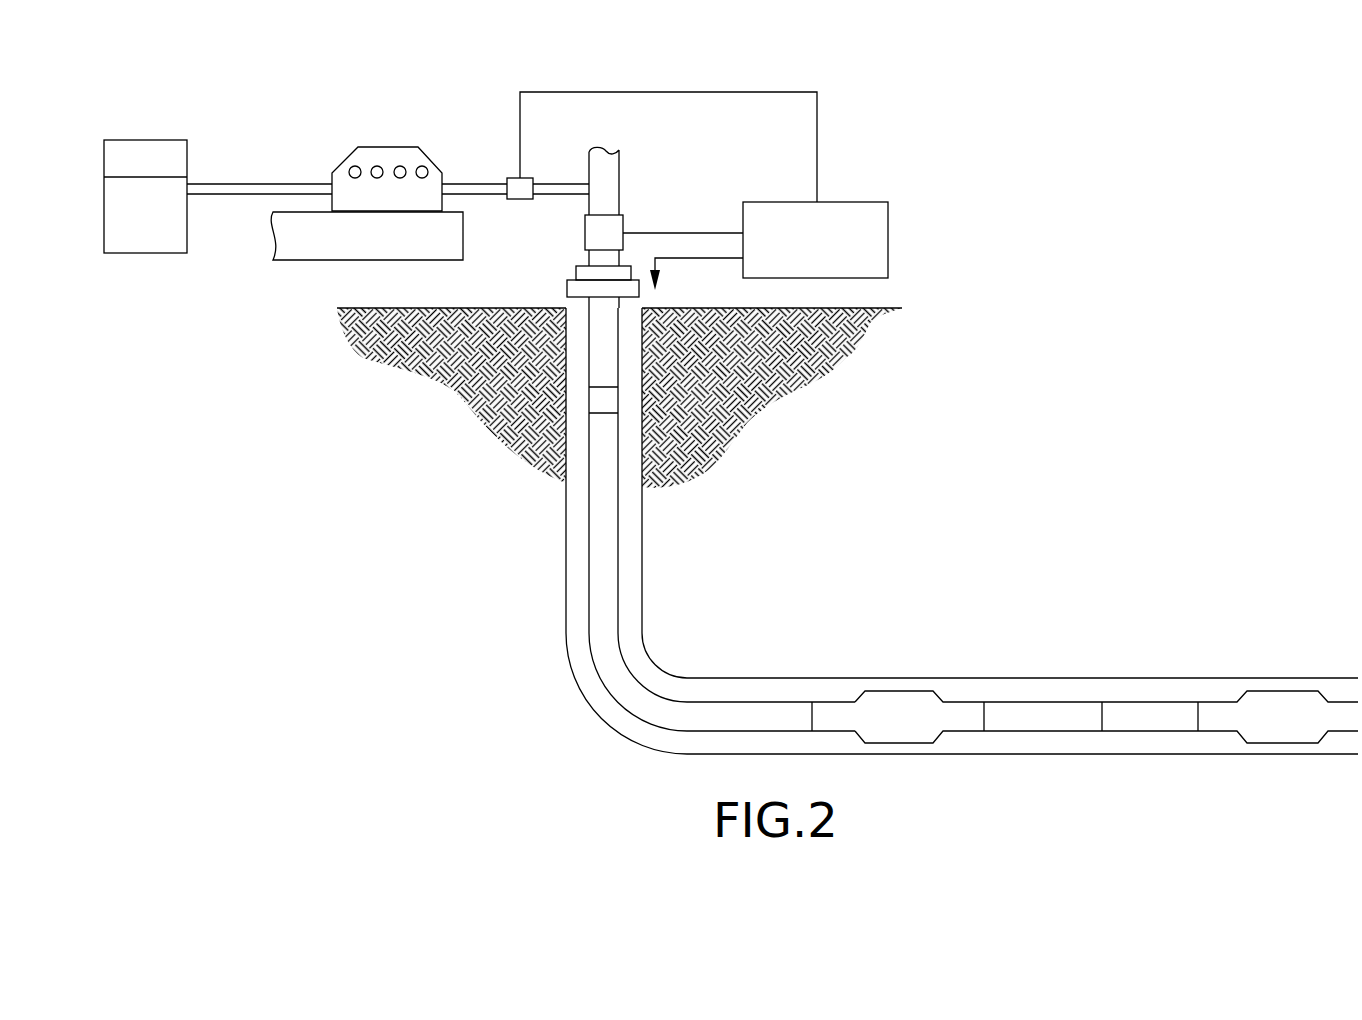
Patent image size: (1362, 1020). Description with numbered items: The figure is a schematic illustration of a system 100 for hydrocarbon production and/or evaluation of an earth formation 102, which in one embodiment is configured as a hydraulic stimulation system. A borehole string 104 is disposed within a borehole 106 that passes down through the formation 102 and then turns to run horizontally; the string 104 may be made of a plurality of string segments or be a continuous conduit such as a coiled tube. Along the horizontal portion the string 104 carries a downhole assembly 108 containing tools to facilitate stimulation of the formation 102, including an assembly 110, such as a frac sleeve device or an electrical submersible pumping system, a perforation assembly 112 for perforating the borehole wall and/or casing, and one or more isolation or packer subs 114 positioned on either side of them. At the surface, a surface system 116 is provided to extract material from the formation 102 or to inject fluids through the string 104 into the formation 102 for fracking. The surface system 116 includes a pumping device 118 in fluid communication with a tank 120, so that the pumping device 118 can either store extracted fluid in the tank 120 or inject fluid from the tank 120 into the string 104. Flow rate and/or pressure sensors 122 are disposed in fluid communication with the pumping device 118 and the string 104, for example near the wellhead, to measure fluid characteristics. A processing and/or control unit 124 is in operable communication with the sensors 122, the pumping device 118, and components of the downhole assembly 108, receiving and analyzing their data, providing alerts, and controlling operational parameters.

The system 100 is at (1125, 252).
The earth formation 102 is at (487, 407).
The borehole string 104 is at (600, 555).
The borehole 106 is at (577, 647).
The downhole assembly 108 is at (1192, 628).
The assembly 110 is at (1025, 720).
The perforation assembly 112 is at (1132, 710).
The isolation or packer sub 114 is at (883, 702).
The surface system 116 is at (312, 106).
The pumping device 118 is at (413, 158).
The tank 120 is at (143, 232).
The flow rate and/or pressure sensor 122 is at (593, 232).
The processing and/or control unit 124 is at (791, 248).